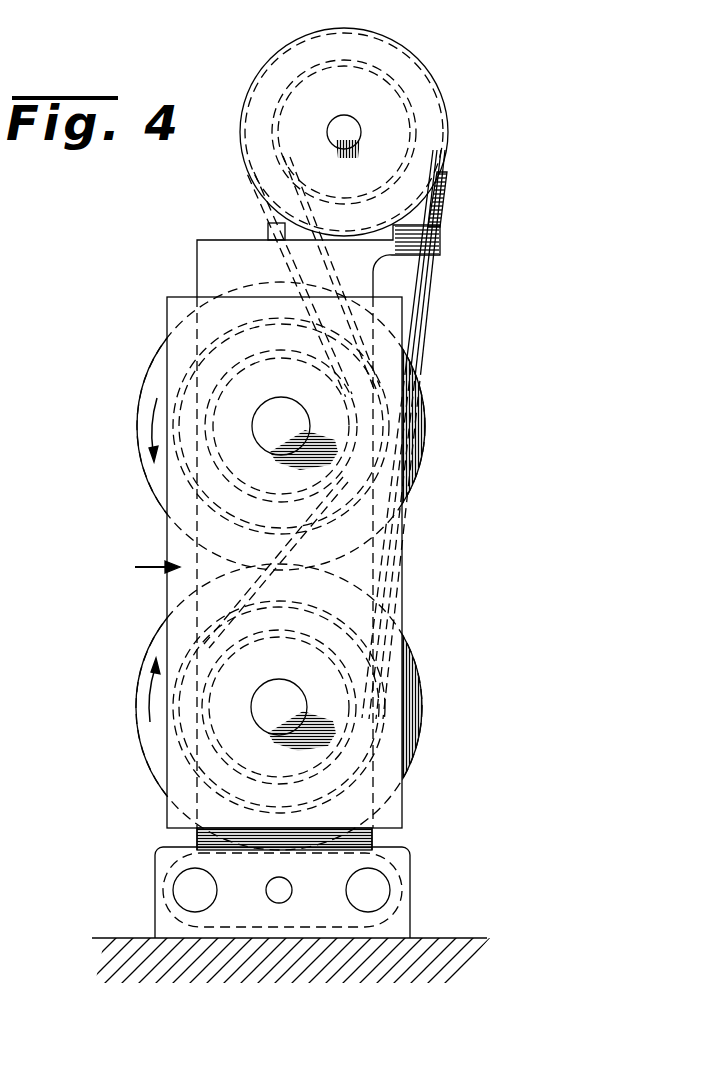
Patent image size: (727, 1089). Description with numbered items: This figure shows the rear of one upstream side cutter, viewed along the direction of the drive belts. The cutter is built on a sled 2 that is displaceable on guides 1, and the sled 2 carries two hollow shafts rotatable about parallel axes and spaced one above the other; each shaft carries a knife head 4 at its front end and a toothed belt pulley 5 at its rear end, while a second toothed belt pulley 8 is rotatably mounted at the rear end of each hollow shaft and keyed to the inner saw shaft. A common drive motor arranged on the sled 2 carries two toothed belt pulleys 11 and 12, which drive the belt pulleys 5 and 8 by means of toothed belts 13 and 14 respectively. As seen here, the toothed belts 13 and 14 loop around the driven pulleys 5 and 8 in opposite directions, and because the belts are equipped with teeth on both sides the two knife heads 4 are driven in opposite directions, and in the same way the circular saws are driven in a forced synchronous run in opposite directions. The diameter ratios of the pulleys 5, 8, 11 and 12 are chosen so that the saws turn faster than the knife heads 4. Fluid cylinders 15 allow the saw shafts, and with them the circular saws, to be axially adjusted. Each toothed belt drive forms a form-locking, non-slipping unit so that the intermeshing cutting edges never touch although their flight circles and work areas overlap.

The guides 1 is at (375, 888).
The sled 2 is at (212, 257).
The knife head 4 is at (150, 381).
The toothed belt pulley 5 is at (227, 510).
The toothed belt pulley 8 is at (215, 463).
The toothed belt pulley 11 is at (402, 100).
The toothed belt pulley 12 is at (407, 62).
The toothed belt 13 is at (408, 288).
The toothed belt 14 is at (270, 210).
The fluid cylinder 15 is at (300, 712).